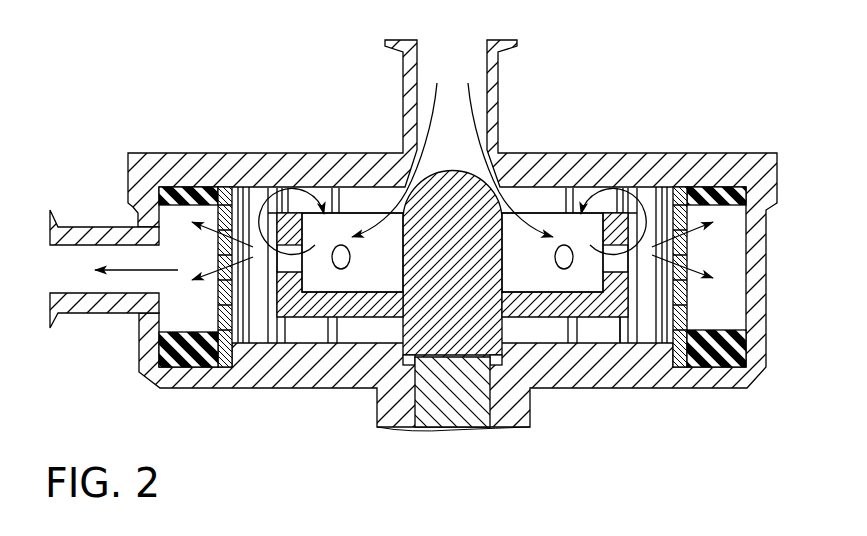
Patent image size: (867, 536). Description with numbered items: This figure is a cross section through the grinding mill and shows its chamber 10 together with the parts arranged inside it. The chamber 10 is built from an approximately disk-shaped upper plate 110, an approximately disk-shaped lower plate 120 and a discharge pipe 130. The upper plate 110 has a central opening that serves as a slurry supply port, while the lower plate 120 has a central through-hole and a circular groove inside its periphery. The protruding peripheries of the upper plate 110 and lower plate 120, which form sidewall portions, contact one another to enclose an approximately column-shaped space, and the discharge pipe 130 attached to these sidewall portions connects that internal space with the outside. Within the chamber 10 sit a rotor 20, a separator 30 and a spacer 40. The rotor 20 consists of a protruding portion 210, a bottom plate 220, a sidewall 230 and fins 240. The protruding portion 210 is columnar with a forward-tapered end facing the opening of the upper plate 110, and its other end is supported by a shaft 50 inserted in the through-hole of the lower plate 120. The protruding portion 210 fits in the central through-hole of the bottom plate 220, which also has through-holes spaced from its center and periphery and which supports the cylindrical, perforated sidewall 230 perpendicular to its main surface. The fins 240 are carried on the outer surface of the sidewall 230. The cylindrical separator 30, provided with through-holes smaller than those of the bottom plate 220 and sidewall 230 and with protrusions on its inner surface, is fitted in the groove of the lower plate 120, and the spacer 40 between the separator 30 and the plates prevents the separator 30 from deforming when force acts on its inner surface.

The chamber 10 is at (673, 151).
The upper plate 110 is at (577, 167).
The lower plate 120 is at (557, 362).
The discharge pipe 130 is at (97, 228).
The rotor 20 is at (597, 325).
The protruding portion 210 is at (453, 200).
The bottom plate 220 is at (362, 305).
The sidewall 230 is at (292, 220).
The fins 240 is at (263, 300).
The separator 30 is at (688, 302).
The spacer 40 is at (190, 360).
The shaft 50 is at (449, 400).